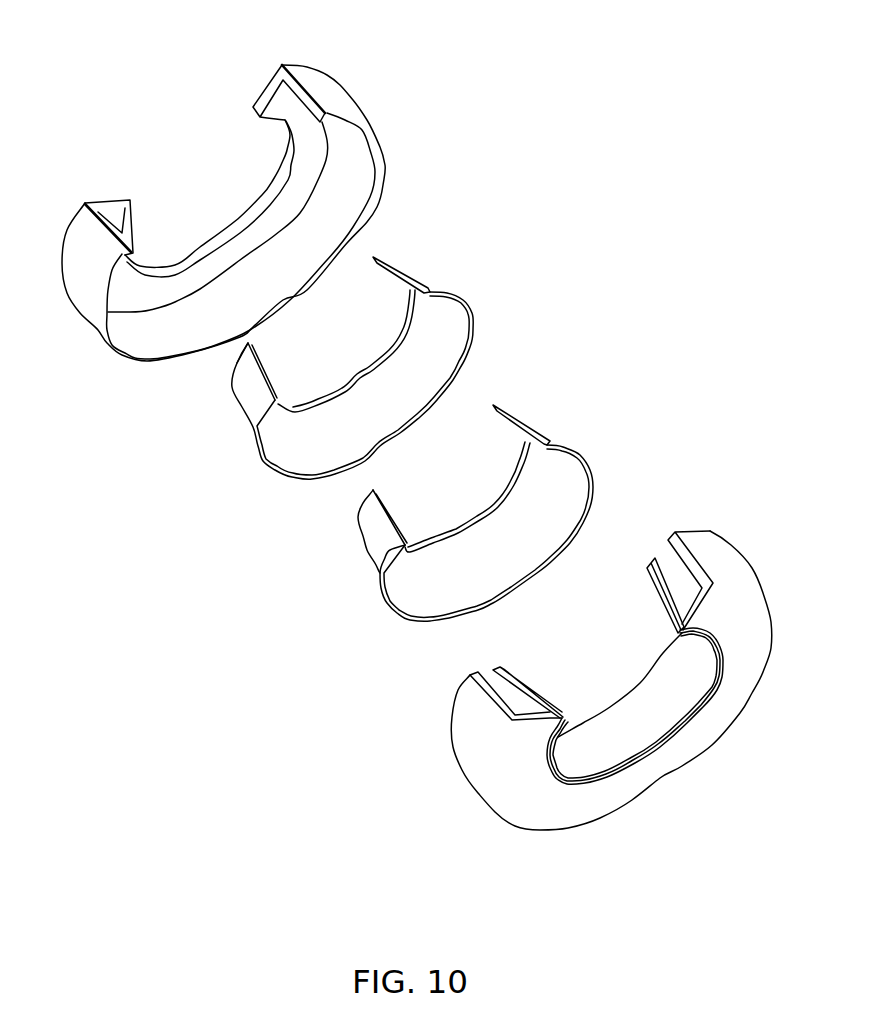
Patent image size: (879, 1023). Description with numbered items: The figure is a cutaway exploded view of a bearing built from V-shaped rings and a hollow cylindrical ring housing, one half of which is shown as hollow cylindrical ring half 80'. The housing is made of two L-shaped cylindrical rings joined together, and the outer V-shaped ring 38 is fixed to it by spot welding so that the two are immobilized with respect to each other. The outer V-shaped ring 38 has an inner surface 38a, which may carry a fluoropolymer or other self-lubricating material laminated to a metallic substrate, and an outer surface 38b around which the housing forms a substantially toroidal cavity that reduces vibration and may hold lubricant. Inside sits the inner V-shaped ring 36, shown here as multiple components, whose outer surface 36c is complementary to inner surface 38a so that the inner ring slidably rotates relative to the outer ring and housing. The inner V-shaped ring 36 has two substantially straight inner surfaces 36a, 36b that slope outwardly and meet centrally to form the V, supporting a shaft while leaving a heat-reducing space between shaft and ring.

The bushing half (first) 80' is at (586, 703).
The outer V-shaped ring 38 is at (351, 538).
The inner surface of outer V-shaped ring 38a is at (381, 434).
The outer surface of outer V-shaped ring 38b is at (253, 410).
The inner V-shaped ring 36 is at (508, 621).
The inner surface of inner V-shaped ring 36a is at (508, 570).
The inner surface of inner V-shaped ring 36b is at (641, 740).
The outer surface of inner V-shaped ring 36c is at (377, 552).